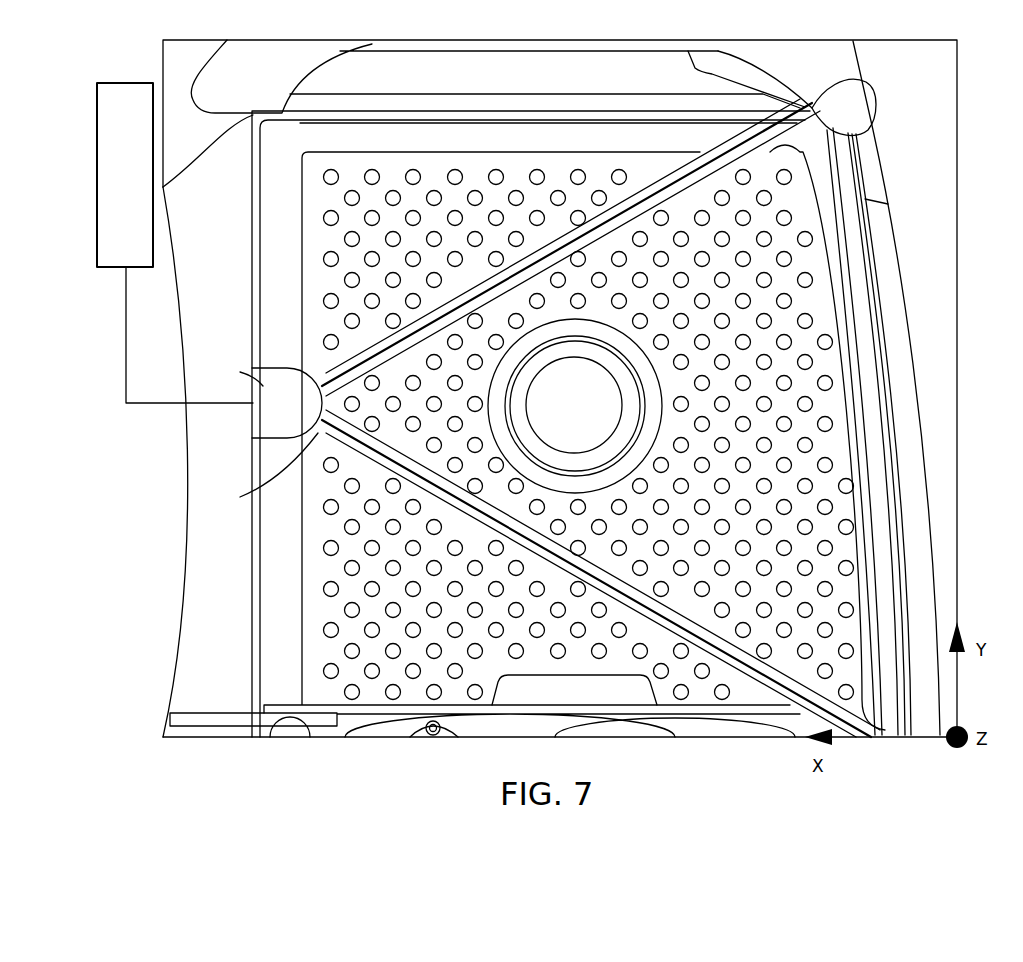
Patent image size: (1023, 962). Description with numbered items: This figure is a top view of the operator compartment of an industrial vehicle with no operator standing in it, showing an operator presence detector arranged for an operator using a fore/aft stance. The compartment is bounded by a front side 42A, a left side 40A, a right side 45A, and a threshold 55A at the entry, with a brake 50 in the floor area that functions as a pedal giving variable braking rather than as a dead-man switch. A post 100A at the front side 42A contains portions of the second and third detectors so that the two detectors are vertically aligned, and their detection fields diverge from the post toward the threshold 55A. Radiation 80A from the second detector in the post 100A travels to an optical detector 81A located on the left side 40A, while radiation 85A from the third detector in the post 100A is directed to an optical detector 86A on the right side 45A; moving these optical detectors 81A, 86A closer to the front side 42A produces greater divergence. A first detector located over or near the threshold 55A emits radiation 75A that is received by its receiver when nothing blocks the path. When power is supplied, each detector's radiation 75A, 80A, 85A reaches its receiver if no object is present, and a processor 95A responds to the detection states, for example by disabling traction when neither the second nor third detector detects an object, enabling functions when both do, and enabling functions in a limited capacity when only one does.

The left side 40A is at (753, 707).
The front side 42A is at (194, 607).
The right side 45A is at (437, 112).
The brake 50 is at (604, 385).
The threshold 55A is at (918, 413).
The radiation 75A is at (848, 297).
The radiation 80A is at (299, 467).
The optical detector 81A is at (873, 738).
The radiation 85A is at (600, 237).
The optical detector 86A is at (832, 90).
The processor 95A is at (97, 146).
The post 100A is at (254, 385).